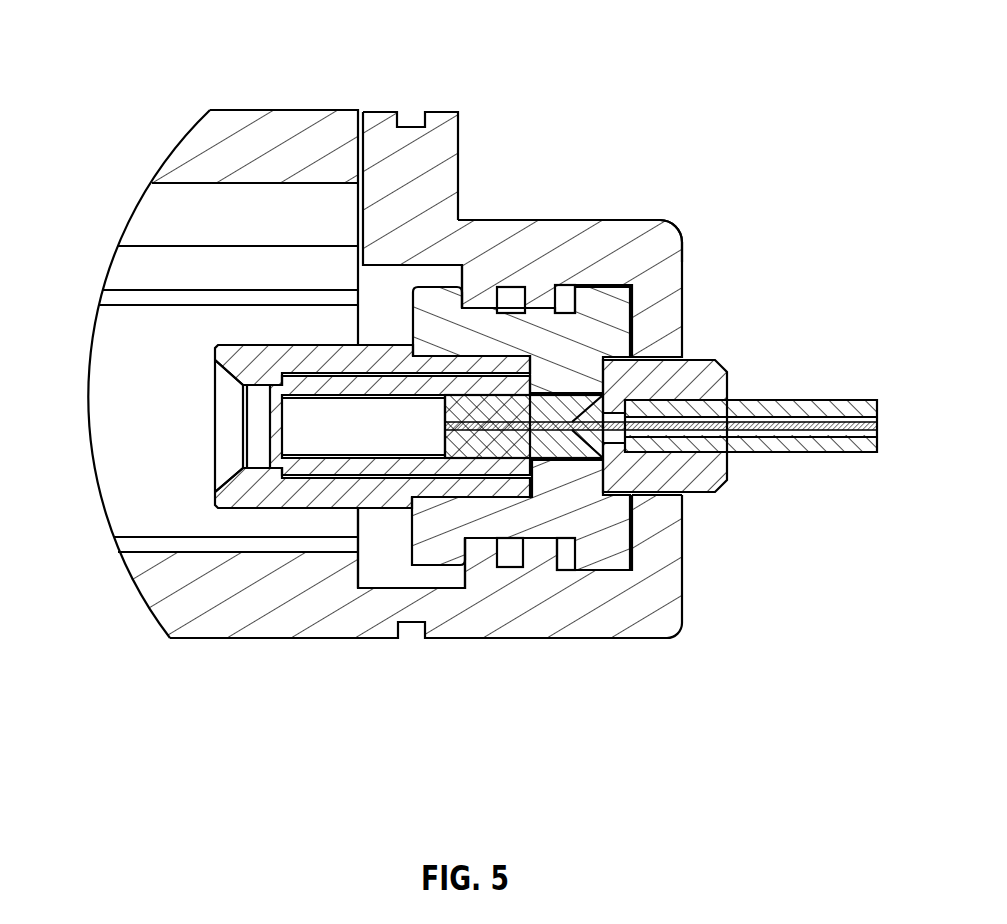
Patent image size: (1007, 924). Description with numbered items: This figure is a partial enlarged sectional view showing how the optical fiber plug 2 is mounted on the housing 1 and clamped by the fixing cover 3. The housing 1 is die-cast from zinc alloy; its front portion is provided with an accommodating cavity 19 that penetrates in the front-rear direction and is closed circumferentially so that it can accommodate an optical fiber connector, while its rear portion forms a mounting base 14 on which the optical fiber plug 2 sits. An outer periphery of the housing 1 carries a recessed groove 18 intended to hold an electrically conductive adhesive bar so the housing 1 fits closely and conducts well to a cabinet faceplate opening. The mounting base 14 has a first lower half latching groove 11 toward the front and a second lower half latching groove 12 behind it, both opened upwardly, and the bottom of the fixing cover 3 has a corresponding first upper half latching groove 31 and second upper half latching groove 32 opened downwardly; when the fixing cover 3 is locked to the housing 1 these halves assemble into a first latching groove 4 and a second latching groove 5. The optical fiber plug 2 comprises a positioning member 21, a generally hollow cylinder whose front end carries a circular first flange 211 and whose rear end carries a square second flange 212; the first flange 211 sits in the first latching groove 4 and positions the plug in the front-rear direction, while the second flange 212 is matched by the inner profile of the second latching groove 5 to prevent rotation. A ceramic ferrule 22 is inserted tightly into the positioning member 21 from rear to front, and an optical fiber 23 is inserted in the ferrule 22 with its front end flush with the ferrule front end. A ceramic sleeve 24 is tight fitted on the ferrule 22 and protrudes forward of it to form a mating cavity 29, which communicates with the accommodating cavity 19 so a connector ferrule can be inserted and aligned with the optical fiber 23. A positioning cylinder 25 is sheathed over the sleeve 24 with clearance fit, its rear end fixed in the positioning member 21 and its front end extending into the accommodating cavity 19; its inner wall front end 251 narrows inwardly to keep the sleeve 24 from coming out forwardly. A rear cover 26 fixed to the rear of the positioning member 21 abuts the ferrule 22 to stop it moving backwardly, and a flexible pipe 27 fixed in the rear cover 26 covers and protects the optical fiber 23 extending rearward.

The housing 1 is at (205, 638).
The accommodating cavity 19 is at (158, 432).
The fixing cover 3 is at (668, 220).
The second flange 212 is at (653, 245).
The first latching groove 4 is at (363, 572).
The first upper half latching groove 31 is at (384, 306).
The first lower half latching groove 11 is at (387, 562).
The recessed groove 18 is at (410, 637).
The second latching groove 5 is at (560, 563).
The mounting base 14 is at (535, 628).
The second lower half latching groove 12 is at (568, 560).
The first flange 211 is at (563, 287).
The second upper half latching groove 32 is at (590, 298).
The positioning member 21 is at (567, 338).
The positioning cylinder 25 is at (293, 363).
The inner wall front end 251 is at (253, 380).
The sleeve 24 is at (363, 388).
The mating cavity 29 is at (335, 428).
The ferrule 22 is at (540, 447).
The optical fiber 23 is at (837, 443).
The rear cover 26 is at (705, 385).
The flexible pipe 27 is at (807, 410).
The optical fiber plug 2 is at (760, 455).